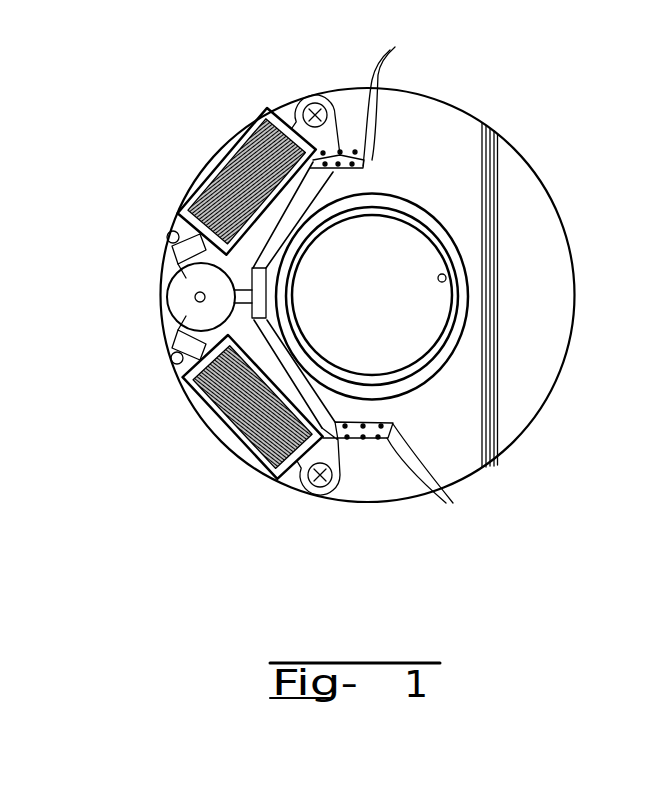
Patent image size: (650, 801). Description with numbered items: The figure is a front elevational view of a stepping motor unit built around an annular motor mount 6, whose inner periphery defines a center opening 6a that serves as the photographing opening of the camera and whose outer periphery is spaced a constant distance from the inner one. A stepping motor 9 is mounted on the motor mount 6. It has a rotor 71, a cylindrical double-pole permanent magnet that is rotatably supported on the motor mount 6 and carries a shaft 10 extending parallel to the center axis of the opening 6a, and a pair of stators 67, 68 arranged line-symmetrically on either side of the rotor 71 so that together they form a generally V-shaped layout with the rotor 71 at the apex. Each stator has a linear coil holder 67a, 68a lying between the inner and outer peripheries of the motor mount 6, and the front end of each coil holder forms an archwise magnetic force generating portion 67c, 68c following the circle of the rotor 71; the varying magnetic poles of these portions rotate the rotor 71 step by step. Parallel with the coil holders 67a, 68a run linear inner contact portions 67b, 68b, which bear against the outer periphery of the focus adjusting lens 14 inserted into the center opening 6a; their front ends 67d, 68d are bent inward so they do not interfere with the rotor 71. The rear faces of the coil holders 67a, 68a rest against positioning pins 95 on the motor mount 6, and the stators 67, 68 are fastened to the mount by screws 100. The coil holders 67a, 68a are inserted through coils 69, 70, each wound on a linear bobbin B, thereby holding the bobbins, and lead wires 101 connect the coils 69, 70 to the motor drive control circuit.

The annular motor mount 6 is at (527, 180).
The center opening 6a is at (446, 290).
The stepping motor 9 is at (120, 305).
The shaft 10 is at (195, 297).
The focus adjusting lens 14 is at (302, 222).
The stator 67 is at (206, 436).
The coil holder 67a is at (175, 377).
The inner contact portion 67b is at (283, 372).
The magnetic force generating portion 67c is at (177, 320).
The front end of inner contact portion 67d is at (180, 333).
The stator 68 is at (226, 168).
The coil holder 68a is at (176, 212).
The inner contact portion 68b is at (276, 222).
The magnetic force generating portion 68c is at (160, 255).
The front end of inner contact portion 68d is at (183, 270).
The coil 69 is at (232, 432).
The coil 70 is at (247, 148).
The rotor 71 is at (173, 313).
The positioning pin 95 is at (167, 233).
The screw 100 is at (313, 102).
The lead wire 101 is at (426, 283).
The linear bobbin B is at (293, 105).